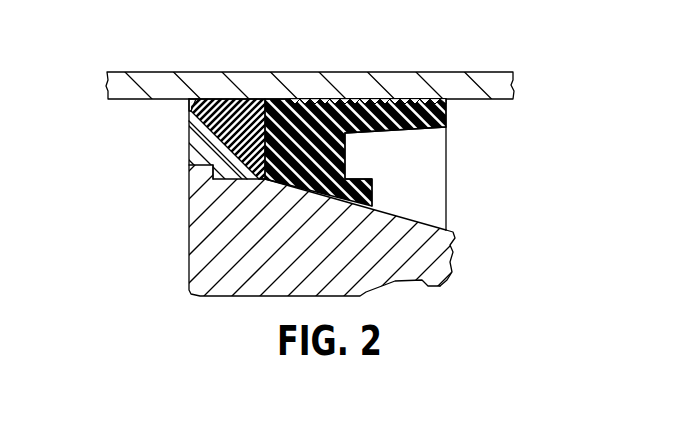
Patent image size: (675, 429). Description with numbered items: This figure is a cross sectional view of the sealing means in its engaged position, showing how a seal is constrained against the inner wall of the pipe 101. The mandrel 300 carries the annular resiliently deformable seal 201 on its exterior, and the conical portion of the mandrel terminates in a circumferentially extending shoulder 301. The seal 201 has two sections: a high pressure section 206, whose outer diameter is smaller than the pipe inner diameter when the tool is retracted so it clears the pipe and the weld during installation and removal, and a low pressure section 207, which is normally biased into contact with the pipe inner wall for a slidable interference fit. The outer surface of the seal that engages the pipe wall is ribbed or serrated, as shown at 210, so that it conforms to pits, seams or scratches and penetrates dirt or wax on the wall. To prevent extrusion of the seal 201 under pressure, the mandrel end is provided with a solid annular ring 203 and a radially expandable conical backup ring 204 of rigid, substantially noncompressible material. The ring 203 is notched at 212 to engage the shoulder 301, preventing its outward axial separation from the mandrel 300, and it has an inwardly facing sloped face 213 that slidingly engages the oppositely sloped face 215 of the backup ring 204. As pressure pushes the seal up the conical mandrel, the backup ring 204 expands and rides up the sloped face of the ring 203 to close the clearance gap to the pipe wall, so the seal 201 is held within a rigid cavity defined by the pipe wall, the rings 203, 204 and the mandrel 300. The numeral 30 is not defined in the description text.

The pipe 101 is at (118, 82).
The sloped face 215 is at (230, 120).
The radially expandable conical backup ring 204 is at (247, 110).
The high pressure section 206 is at (318, 118).
The ribbed or serrated outer surface 210 is at (367, 105).
The low pressure section 207 is at (411, 110).
The inwardly facing sloped face 213 is at (198, 108).
The solid annular ring 203 is at (190, 128).
The notch 212 is at (189, 165).
The shoulder 301 is at (203, 166).
The base block 30 is at (212, 265).
The annular resiliently deformable seal 201 is at (384, 182).
The mandrel 300 is at (451, 296).